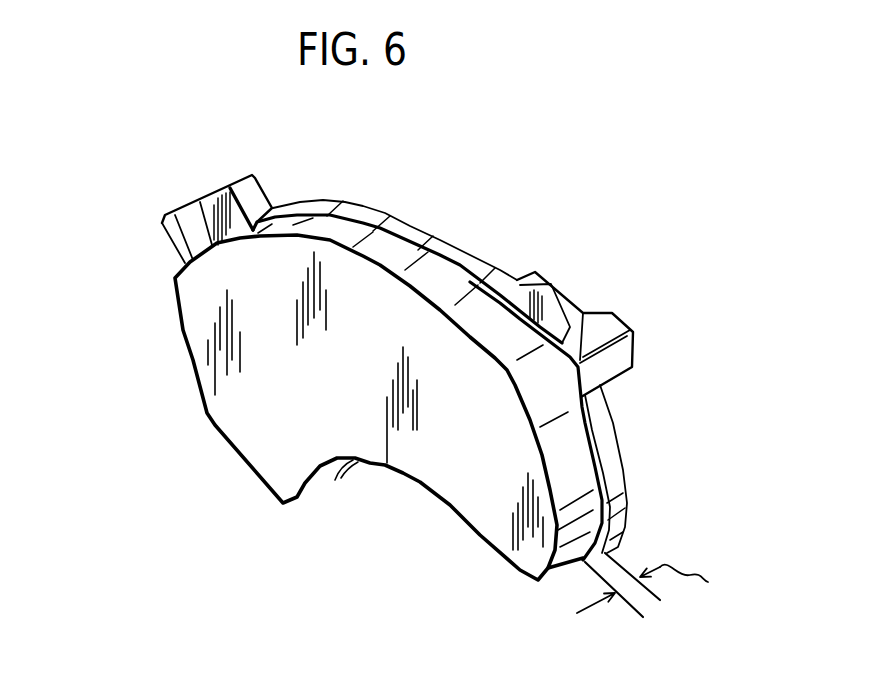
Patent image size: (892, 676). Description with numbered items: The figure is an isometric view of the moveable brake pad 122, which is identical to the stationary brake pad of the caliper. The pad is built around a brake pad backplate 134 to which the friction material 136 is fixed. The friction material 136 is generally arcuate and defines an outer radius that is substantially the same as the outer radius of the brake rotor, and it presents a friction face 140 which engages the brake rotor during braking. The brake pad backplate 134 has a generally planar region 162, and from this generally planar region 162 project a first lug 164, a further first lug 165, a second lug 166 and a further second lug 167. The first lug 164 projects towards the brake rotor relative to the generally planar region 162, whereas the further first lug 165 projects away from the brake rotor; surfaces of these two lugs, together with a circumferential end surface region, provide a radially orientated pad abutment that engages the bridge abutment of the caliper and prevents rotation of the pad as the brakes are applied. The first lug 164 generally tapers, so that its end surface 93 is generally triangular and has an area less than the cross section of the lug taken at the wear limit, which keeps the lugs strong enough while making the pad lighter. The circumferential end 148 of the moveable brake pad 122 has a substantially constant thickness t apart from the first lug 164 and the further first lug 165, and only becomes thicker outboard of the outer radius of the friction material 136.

The moveable brake pad 122 is at (508, 187).
The brake pad backplate 134 is at (477, 248).
The friction material 136 is at (420, 463).
The friction face 140 is at (267, 442).
The circumferential end 148 is at (620, 470).
The generally planar region 162 is at (380, 197).
The first lug 164 is at (530, 407).
The further first lug 165 is at (627, 312).
The second lug 166 is at (183, 205).
The further second lug 167 is at (213, 187).
The end surface 93 is at (568, 360).